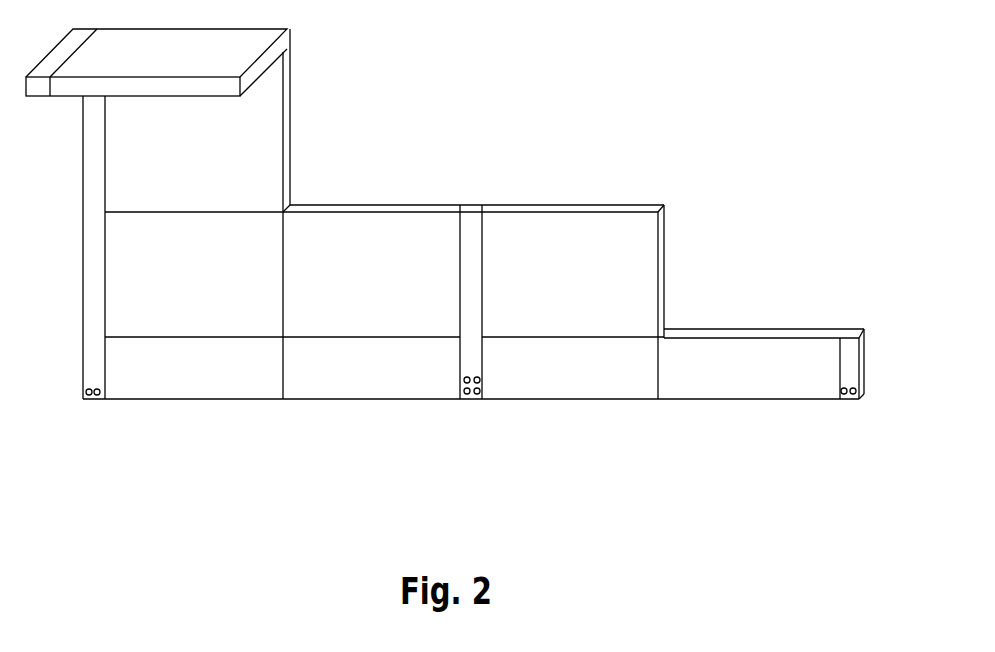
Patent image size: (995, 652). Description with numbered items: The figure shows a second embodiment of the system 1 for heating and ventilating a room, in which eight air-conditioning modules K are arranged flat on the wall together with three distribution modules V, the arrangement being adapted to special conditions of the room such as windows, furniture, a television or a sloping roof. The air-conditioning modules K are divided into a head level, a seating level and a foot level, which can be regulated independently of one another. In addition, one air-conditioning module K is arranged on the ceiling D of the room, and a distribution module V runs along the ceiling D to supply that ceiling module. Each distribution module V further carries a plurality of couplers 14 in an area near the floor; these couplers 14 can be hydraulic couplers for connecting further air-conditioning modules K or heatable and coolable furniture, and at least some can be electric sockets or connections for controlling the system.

The system 1 is at (445, 214).
The couplers 14 is at (93, 397).
The distribution module V is at (37, 87).
The air-conditioning module K is at (650, 146).
The ceiling D is at (262, 66).